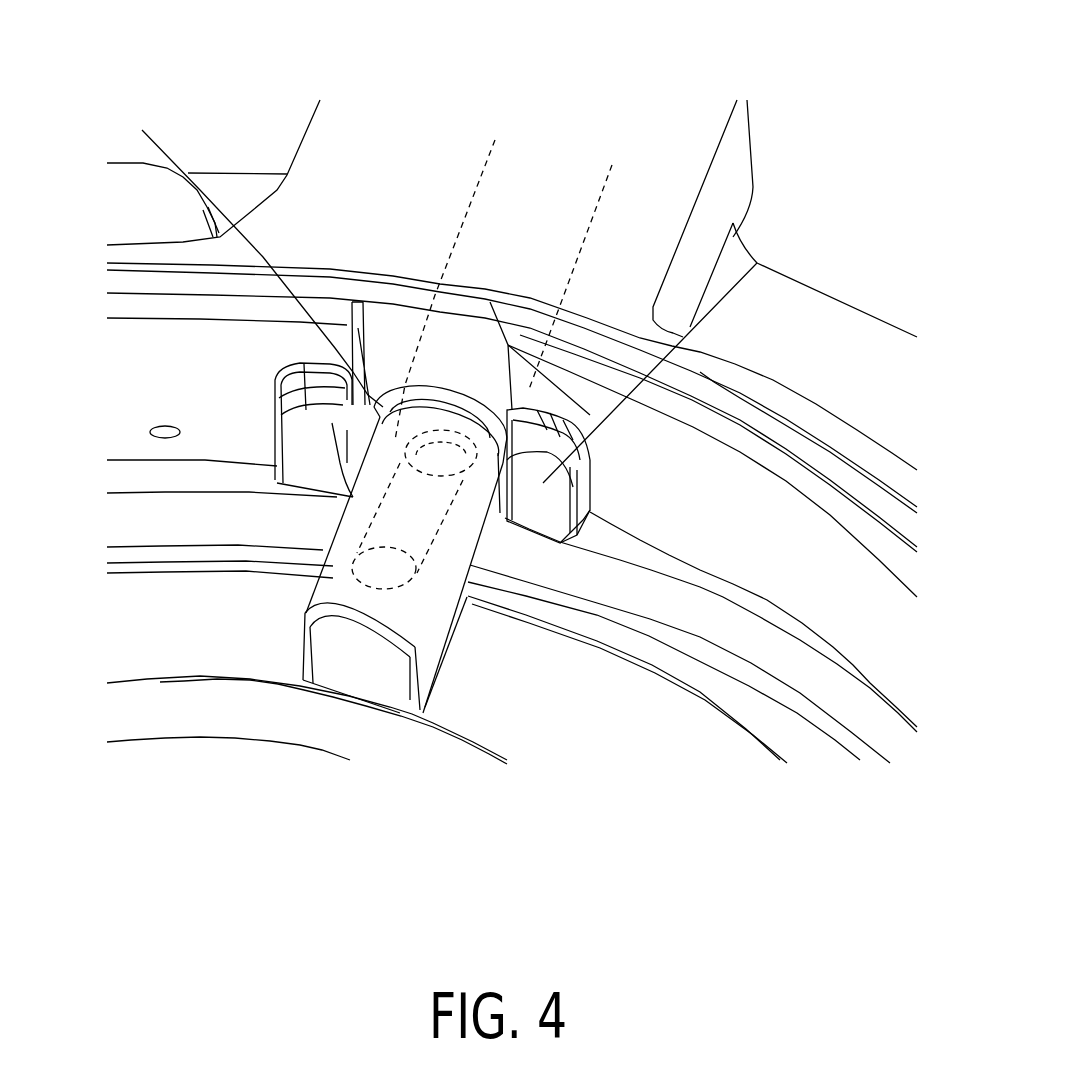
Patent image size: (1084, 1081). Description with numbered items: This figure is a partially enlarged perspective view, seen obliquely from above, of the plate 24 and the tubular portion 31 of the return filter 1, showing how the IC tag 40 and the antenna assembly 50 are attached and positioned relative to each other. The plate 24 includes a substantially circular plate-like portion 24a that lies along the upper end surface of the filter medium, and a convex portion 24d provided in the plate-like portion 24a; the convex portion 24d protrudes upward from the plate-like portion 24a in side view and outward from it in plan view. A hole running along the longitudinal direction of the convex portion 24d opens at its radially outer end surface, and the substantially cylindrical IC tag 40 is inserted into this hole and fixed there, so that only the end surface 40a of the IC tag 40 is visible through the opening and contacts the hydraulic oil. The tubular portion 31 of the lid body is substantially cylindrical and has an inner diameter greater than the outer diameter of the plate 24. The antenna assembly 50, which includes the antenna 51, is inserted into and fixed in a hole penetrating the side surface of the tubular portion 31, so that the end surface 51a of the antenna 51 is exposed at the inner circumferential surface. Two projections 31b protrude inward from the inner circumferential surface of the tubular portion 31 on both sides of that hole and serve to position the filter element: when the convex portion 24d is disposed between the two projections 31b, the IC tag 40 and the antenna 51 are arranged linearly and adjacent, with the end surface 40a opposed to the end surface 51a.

The return filter 1 is at (769, 45).
The plate 24 is at (683, 860).
The plate-like portion 24a is at (563, 697).
The convex portion 24d is at (380, 672).
The tubular portion 31 is at (765, 151).
The projections 31b is at (757, 263).
The IC tag 40 is at (430, 397).
The end surface 40a is at (427, 397).
The antenna assembly 50 is at (142, 130).
The antenna 51 is at (305, 80).
The end surface 51a is at (460, 398).